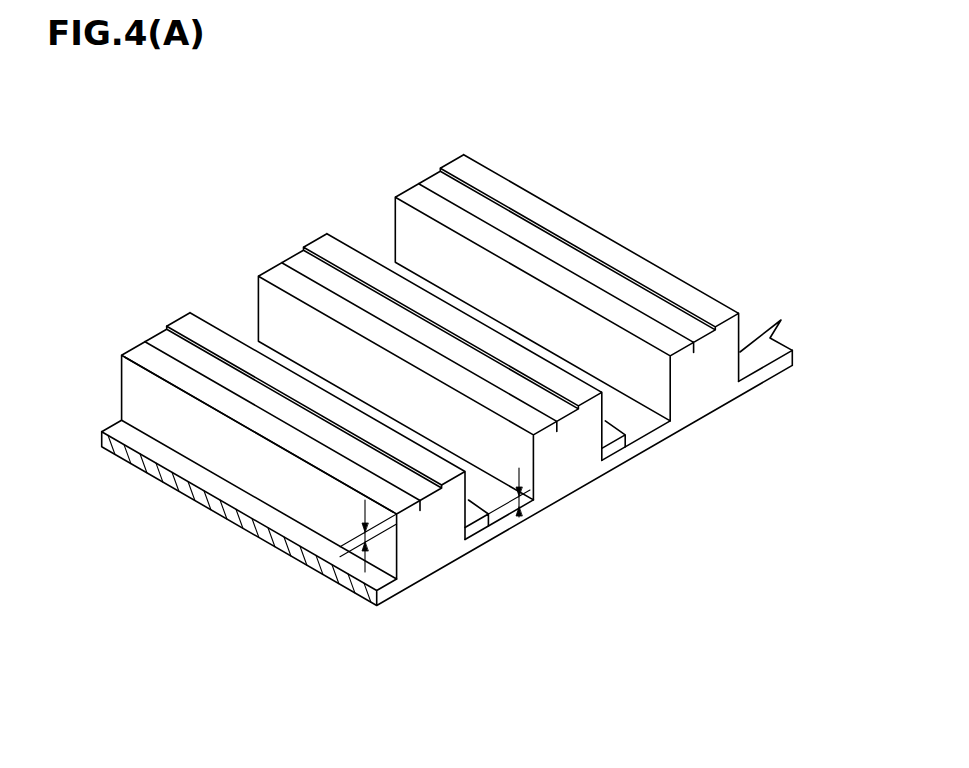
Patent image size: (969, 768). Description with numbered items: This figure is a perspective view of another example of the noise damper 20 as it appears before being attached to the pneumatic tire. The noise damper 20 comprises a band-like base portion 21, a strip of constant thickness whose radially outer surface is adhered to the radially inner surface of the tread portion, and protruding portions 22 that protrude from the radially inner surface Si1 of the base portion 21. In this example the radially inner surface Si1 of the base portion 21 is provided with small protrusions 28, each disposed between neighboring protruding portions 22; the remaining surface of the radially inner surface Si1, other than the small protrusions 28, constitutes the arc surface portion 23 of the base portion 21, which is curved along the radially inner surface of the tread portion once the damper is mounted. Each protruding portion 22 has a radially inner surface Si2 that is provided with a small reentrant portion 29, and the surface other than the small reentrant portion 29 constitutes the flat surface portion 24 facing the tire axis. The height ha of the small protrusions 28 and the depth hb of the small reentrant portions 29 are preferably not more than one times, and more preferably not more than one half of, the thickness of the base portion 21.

The noise damper 20 is at (369, 152).
The base portion 21 is at (502, 530).
The protruding portions 22 is at (143, 400).
The arc surface portions 23 is at (279, 352).
The flat surface portion 24 is at (148, 350).
The small protrusions 28 is at (464, 497).
The small reentrant portion 29 is at (196, 358).
The radially inner surface of the base portion Si1 is at (484, 530).
The radially inner surface of the protruding portion Si2 is at (141, 356).
The height of the small protrusions ha is at (530, 500).
The depth of the small reentrant portions hb is at (396, 516).